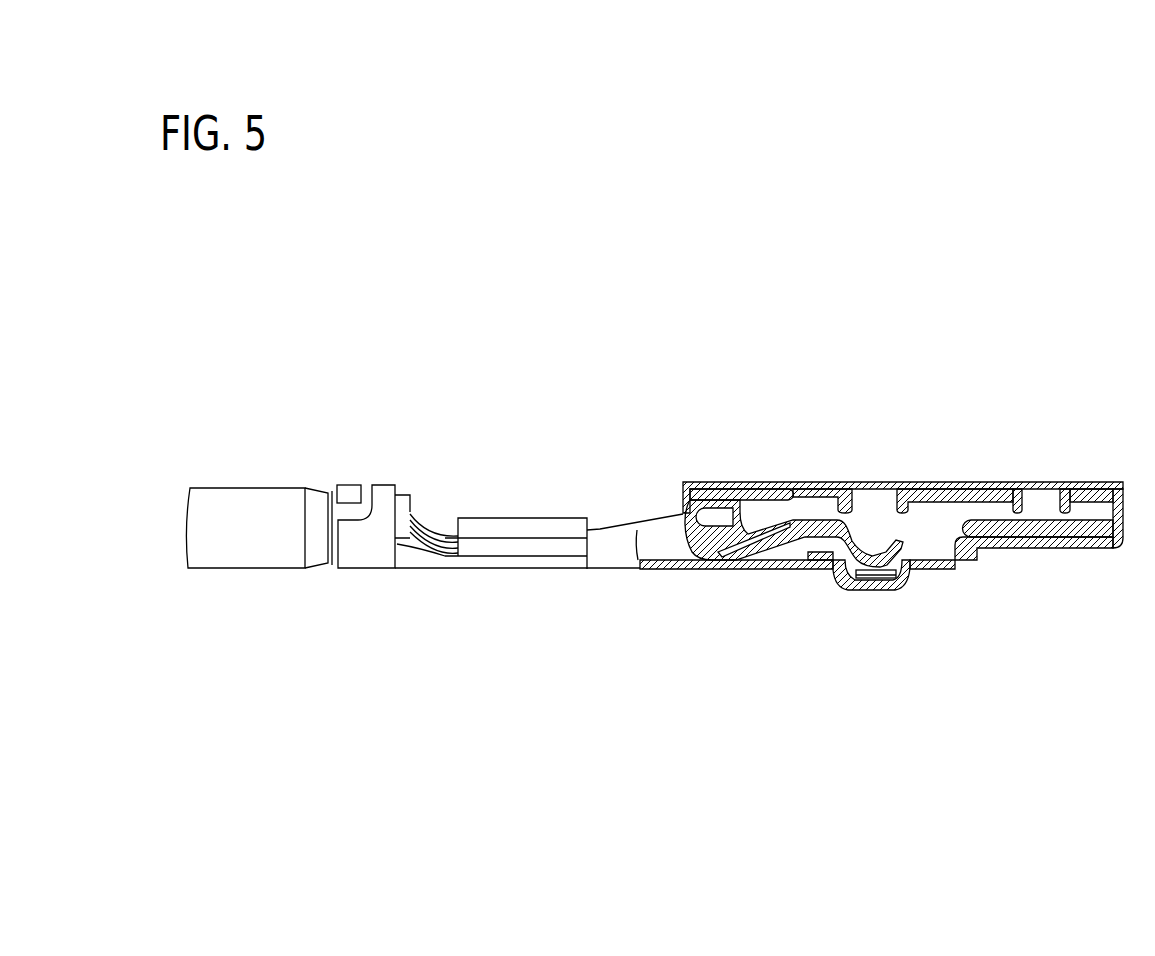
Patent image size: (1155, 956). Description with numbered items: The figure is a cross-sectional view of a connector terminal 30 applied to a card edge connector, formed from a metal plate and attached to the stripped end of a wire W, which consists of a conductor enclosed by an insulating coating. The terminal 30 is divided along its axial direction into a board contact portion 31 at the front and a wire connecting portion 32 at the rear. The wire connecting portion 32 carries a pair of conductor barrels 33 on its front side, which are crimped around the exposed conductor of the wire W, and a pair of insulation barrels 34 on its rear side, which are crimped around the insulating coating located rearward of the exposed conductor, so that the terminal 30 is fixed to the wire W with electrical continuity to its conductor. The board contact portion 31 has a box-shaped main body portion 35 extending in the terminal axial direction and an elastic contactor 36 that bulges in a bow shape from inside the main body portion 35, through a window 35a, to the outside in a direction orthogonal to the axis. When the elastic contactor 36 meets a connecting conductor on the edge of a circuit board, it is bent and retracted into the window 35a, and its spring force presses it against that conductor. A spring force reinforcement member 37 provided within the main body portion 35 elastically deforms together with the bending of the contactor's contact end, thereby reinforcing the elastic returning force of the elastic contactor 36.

The wire W is at (240, 497).
The connector terminal 30 is at (718, 663).
The board contact portion 31 is at (757, 572).
The wire connecting portion 32 is at (539, 556).
The conductor barrels 33 is at (528, 522).
The insulation barrels 34 is at (383, 485).
The main body portion 35 is at (967, 482).
The window 35a is at (916, 580).
The elastic contactor 36 is at (878, 592).
The spring force reinforcement member 37 is at (813, 518).